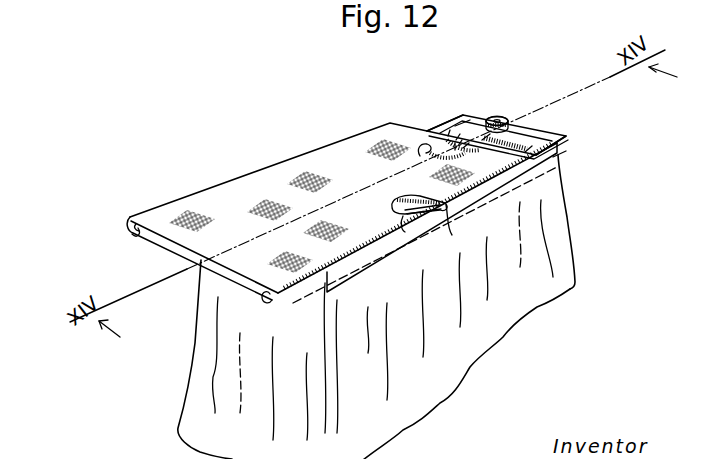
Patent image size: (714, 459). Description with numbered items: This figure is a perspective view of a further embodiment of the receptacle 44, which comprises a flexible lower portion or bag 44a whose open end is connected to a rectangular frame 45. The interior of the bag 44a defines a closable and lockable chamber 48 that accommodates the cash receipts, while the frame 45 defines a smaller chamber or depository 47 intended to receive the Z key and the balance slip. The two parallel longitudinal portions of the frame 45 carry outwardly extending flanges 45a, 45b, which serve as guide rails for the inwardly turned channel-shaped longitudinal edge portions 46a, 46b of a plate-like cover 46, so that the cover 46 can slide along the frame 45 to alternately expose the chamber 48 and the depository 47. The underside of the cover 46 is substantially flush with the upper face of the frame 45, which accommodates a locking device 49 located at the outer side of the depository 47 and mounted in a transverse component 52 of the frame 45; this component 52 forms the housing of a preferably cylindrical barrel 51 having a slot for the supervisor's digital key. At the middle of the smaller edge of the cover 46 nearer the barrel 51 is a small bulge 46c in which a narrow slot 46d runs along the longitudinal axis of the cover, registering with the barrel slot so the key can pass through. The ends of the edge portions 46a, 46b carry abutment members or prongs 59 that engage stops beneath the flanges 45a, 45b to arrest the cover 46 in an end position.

The receptacle 44 is at (155, 373).
The flexible lower portion or bag 44a is at (518, 344).
The rectangular frame 45 is at (553, 157).
The outwardly extending flange 45a is at (570, 137).
The outwardly extending flange 45b is at (453, 128).
The plate-like cover 46 is at (363, 138).
The inwardly turned channel-shaped longitudinal edge portion 46a is at (448, 228).
The inwardly turned channel-shaped longitudinal edge portion 46b is at (150, 240).
The bulge 46c is at (420, 156).
The narrow slot 46d is at (468, 153).
The smaller chamber or depository 47 is at (463, 120).
The closable and lockable chamber 48 is at (395, 206).
The locking device 49 is at (490, 113).
The cylindrical barrel 51 is at (506, 125).
The transverse component 52 is at (540, 132).
The abutment member or prong 59 is at (140, 240).